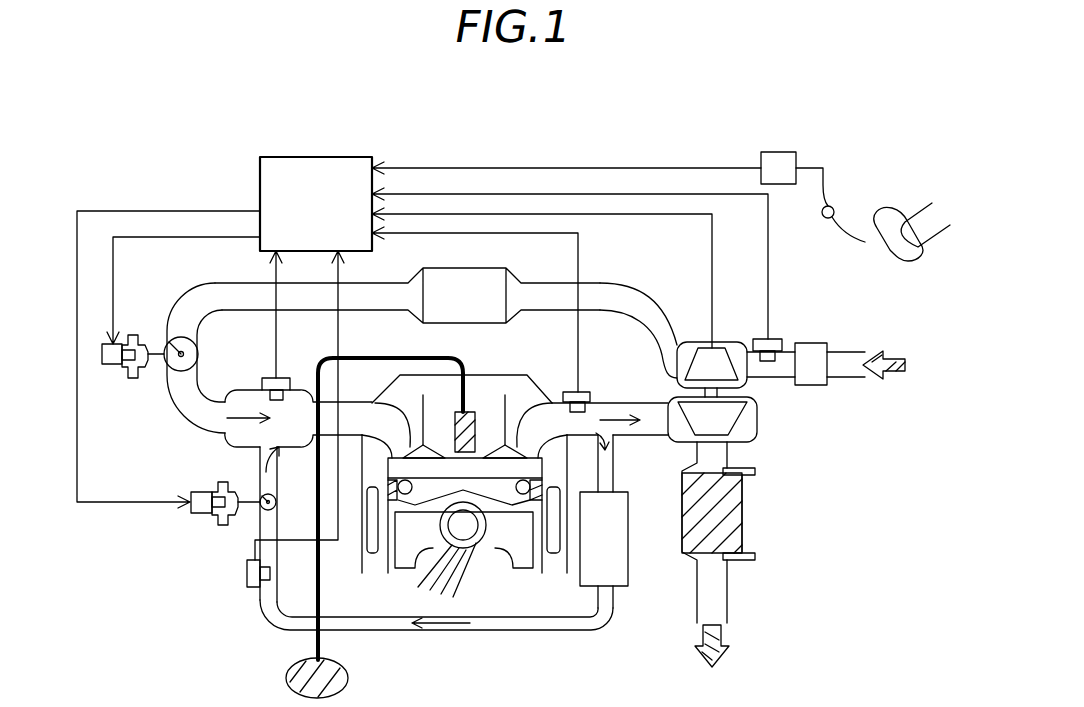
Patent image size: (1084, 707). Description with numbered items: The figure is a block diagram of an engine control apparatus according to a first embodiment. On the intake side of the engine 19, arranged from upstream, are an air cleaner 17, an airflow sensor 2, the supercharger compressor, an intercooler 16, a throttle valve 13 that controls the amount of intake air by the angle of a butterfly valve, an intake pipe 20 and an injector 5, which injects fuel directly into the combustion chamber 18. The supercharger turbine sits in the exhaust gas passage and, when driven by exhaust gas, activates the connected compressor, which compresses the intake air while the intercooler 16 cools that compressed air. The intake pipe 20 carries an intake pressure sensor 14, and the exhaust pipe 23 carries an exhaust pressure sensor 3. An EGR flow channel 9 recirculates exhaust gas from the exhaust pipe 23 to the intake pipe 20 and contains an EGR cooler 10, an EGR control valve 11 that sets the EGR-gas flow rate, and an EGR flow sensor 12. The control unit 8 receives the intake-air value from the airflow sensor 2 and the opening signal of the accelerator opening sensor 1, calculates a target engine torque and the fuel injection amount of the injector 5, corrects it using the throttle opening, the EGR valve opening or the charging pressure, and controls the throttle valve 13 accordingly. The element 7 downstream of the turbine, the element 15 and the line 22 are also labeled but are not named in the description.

The accelerator opening sensor 1 is at (777, 152).
The airflow sensor 2 is at (775, 339).
The exhaust pressure sensor 3 is at (572, 392).
The injector 5 is at (476, 418).
The particulate filter 7 is at (735, 515).
The control unit 8 is at (316, 157).
The EGR flow channel 9 is at (511, 632).
The EGR cooler 10 is at (620, 568).
The EGR control valve 11 is at (200, 515).
The EGR flow sensor 12 is at (247, 575).
The throttle valve 13 is at (116, 366).
The intake pressure sensor 14 is at (264, 378).
The fuel tank 15 is at (350, 676).
The intercooler 16 is at (497, 283).
The air cleaner 17 is at (815, 343).
The combustion chamber 18 is at (532, 468).
The engine 19 is at (520, 505).
The intake pipe 20 is at (192, 412).
The fuel supply line 22 is at (312, 650).
The exhaust pipe 23 is at (620, 403).